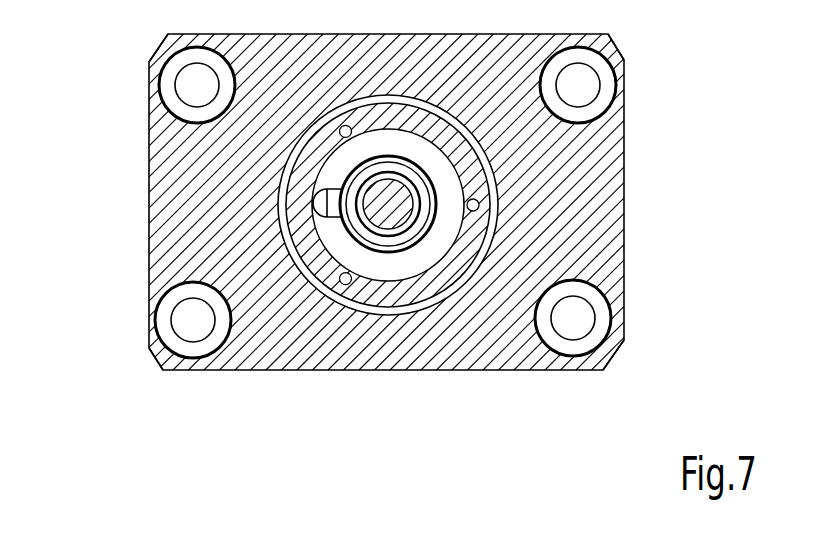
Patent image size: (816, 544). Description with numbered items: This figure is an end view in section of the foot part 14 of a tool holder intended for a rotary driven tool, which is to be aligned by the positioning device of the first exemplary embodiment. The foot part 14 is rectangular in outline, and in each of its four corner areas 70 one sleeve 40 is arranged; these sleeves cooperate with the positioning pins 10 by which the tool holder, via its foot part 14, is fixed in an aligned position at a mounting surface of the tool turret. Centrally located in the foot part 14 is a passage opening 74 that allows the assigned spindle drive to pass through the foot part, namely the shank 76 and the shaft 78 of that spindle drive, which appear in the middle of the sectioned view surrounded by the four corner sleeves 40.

The positioning pin 10 is at (198, 92).
The foot part 14 is at (563, 205).
The sleeve 40 is at (160, 95).
The corner area 70 is at (162, 47).
The passage opening 74 is at (282, 202).
The shank 76 is at (368, 287).
The shaft 78 is at (388, 212).